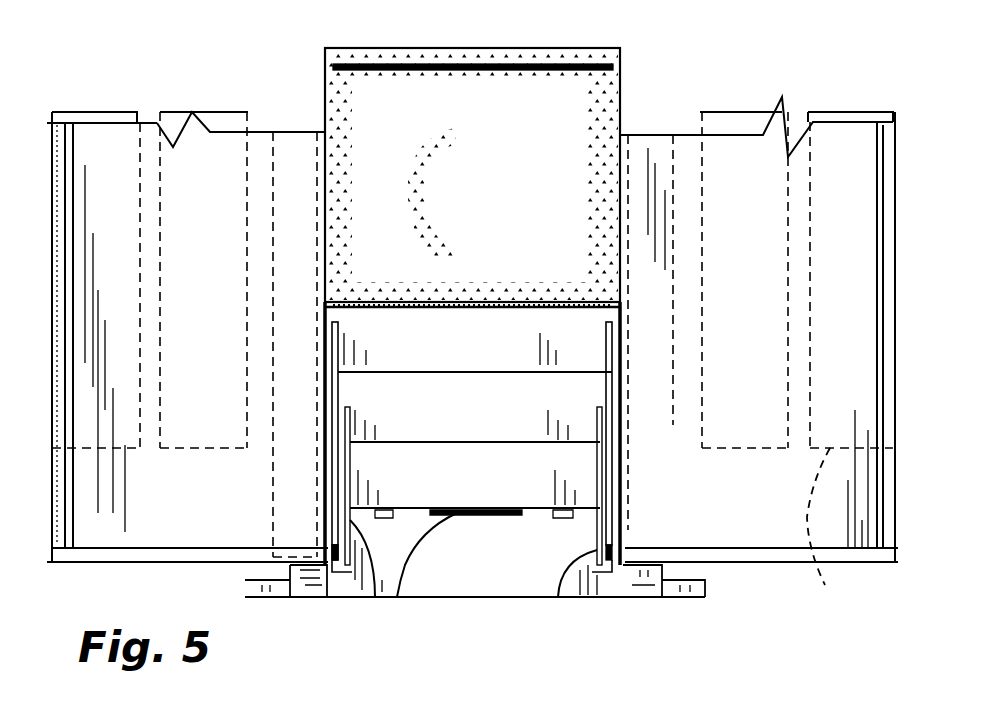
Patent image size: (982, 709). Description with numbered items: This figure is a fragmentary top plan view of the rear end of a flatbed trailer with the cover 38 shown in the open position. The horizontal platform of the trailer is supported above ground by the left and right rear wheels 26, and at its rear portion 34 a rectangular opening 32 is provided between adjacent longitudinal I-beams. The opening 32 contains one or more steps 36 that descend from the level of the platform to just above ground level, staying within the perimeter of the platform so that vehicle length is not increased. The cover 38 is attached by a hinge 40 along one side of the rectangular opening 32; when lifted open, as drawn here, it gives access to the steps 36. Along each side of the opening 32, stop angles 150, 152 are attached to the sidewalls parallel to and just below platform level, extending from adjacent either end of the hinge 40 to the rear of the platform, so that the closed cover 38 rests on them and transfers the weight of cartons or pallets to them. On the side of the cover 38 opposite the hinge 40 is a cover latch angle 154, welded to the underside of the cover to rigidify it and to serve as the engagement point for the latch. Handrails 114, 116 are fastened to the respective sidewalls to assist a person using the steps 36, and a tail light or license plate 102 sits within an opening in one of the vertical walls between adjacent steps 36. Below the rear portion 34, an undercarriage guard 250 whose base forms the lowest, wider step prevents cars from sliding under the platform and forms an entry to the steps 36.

The rear wheels 26 is at (831, 531).
The rectangular opening 32 is at (397, 463).
The rear portion 34 is at (177, 553).
The steps 36 is at (583, 463).
The cover 38 is at (345, 100).
The hinge 40 is at (500, 307).
The tail light or license plate 102 is at (397, 597).
The handrail 114 is at (372, 597).
The handrail 116 is at (560, 598).
The stop angle 150 is at (330, 328).
The stop angle 152 is at (630, 330).
The cover latch angle 154 is at (597, 62).
The undercarriage guard 250 is at (532, 562).